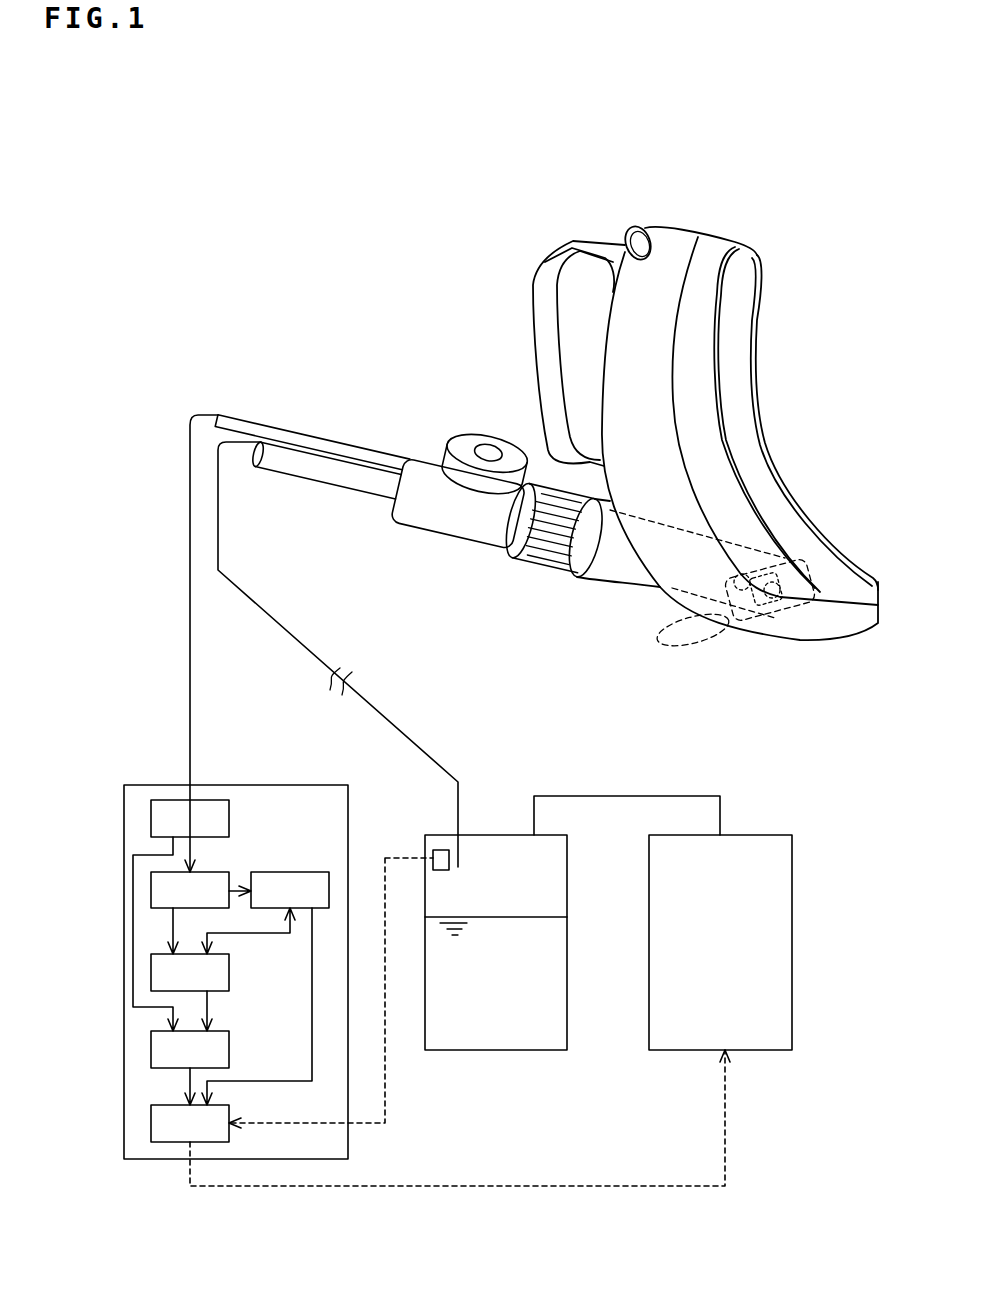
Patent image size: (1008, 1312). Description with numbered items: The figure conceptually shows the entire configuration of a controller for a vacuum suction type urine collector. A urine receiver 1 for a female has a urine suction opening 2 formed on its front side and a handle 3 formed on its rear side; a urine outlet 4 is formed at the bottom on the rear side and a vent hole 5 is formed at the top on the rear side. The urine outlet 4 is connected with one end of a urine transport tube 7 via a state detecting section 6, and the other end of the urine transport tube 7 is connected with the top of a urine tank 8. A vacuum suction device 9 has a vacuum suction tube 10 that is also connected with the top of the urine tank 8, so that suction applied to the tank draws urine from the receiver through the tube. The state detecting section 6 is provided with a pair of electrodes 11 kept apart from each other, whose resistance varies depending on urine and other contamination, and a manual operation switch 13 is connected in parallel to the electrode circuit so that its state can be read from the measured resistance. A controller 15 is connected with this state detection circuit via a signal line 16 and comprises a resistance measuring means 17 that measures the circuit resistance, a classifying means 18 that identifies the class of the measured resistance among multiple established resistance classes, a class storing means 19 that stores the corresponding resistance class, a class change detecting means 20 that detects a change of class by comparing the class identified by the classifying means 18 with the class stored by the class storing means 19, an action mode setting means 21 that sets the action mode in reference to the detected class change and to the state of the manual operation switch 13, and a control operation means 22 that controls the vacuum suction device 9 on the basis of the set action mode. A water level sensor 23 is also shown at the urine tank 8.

The urine receiver 1 is at (777, 290).
The urine suction opening 2 is at (748, 452).
The handle 3 is at (533, 318).
The urine outlet 4 is at (593, 530).
The vent hole 5 is at (630, 240).
The state detecting section 6 is at (578, 675).
The urine transport tube 7 is at (337, 473).
The urine tank 8 is at (490, 1050).
The vacuum suction device 9 is at (760, 1050).
The vacuum suction tube 10 is at (672, 796).
The electrodes 11 is at (670, 621).
The manual operation switch 13 is at (487, 452).
The controller 15 is at (170, 800).
The signal line 16 is at (236, 412).
The resistance measuring means 17 is at (151, 818).
The classifying means 18 is at (151, 891).
The class storing means 19 is at (290, 872).
The class change detecting means 20 is at (151, 966).
The action mode setting means 21 is at (151, 1043).
The control operation means 22 is at (151, 1117).
The water level sensor 23 is at (441, 870).